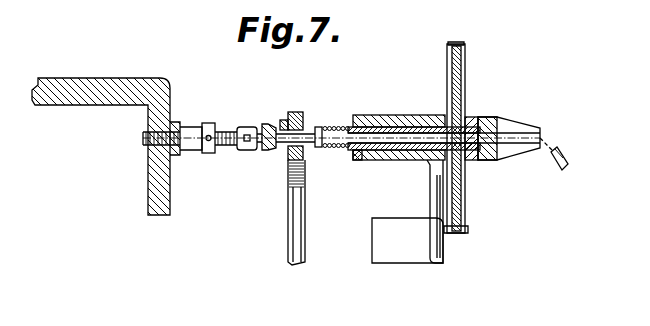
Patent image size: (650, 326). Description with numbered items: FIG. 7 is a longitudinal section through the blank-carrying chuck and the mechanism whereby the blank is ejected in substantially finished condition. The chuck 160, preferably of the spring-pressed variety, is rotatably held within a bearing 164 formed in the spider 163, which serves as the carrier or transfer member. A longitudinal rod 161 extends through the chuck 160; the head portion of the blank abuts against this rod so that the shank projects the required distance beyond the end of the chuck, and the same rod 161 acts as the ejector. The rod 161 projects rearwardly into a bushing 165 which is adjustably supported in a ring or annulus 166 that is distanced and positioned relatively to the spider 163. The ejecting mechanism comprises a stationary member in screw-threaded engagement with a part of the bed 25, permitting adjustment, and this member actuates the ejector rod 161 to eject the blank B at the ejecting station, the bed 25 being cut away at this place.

The bed-plate 25 is at (172, 190).
The chuck 160 is at (492, 118).
The rod 161 is at (378, 140).
The spider 163 is at (447, 258).
The bearing 164 is at (402, 117).
The bushing 165 is at (305, 127).
The ring or annulus 166 is at (297, 211).
The element B is at (565, 156).